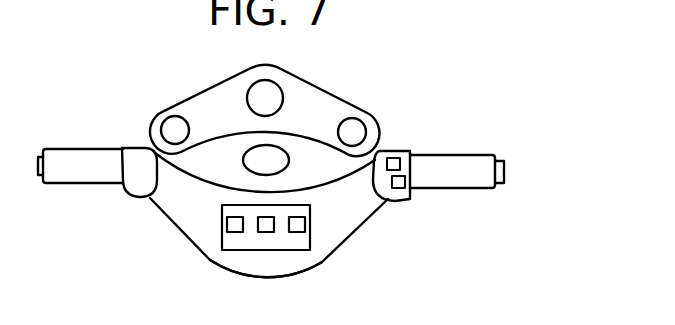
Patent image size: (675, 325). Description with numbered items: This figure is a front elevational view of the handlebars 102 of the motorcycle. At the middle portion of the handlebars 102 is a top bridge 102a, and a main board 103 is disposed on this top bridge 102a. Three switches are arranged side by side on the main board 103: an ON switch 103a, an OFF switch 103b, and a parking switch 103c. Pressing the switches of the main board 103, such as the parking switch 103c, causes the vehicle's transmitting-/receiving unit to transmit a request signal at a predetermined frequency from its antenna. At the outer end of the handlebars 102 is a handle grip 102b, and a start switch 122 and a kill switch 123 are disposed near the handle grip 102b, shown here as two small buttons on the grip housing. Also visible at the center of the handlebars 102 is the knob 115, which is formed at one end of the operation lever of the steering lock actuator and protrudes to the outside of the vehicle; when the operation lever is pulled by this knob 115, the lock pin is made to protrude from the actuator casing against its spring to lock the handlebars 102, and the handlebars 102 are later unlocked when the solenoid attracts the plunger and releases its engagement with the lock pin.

The handlebars 102 is at (361, 211).
The top bridge 102a is at (331, 247).
The handle grip 102b is at (471, 162).
The main board 103 is at (222, 208).
The ON switch 103a is at (227, 226).
The OFF switch 103b is at (264, 232).
The parking switch 103c is at (298, 233).
The knob 115 is at (248, 150).
The start switch 122 is at (405, 193).
The kill switch 123 is at (405, 134).